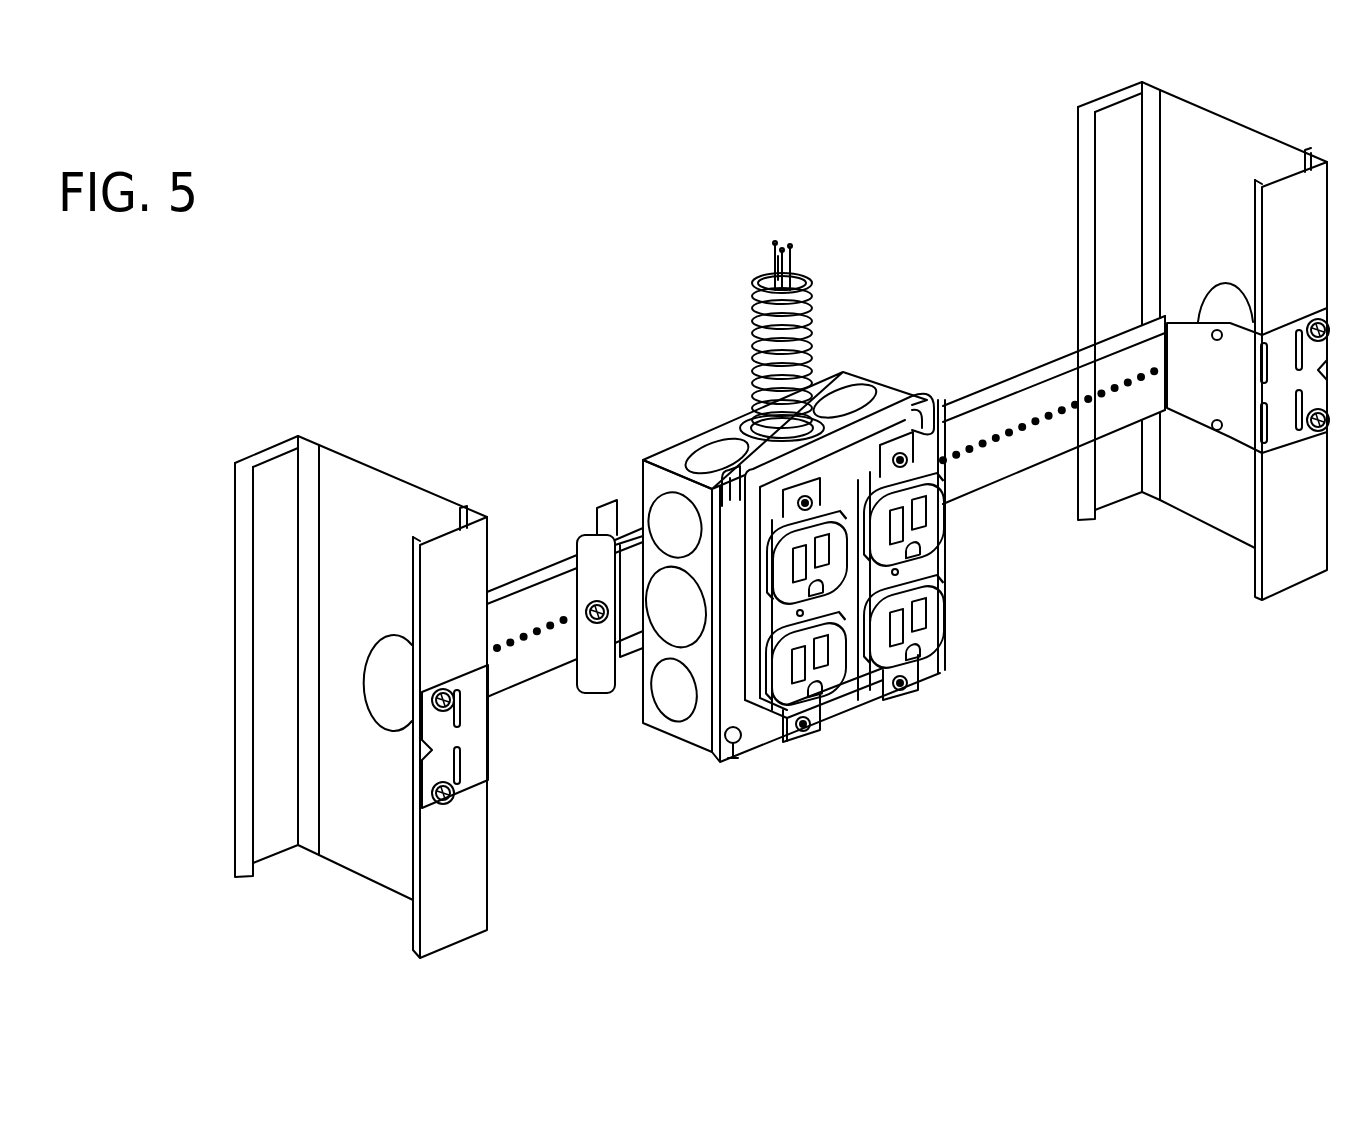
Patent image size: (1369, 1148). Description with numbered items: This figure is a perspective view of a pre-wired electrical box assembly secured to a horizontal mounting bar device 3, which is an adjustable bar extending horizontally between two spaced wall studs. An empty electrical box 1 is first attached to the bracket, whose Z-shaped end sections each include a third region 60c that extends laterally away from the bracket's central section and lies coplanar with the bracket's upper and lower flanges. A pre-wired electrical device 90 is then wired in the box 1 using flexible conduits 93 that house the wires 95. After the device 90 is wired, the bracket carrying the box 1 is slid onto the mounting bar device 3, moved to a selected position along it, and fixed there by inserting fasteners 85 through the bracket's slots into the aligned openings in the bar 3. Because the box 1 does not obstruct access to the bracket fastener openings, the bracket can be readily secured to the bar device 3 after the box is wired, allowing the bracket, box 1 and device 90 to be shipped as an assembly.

The electrical box 1 is at (690, 732).
The horizontal mounting bar device 3 is at (1023, 486).
The third region 60c is at (598, 678).
The fasteners 85 is at (598, 597).
The pre-wired electrical device 90 is at (830, 680).
The flexible conduits 93 is at (750, 333).
The wires 95 is at (784, 242).